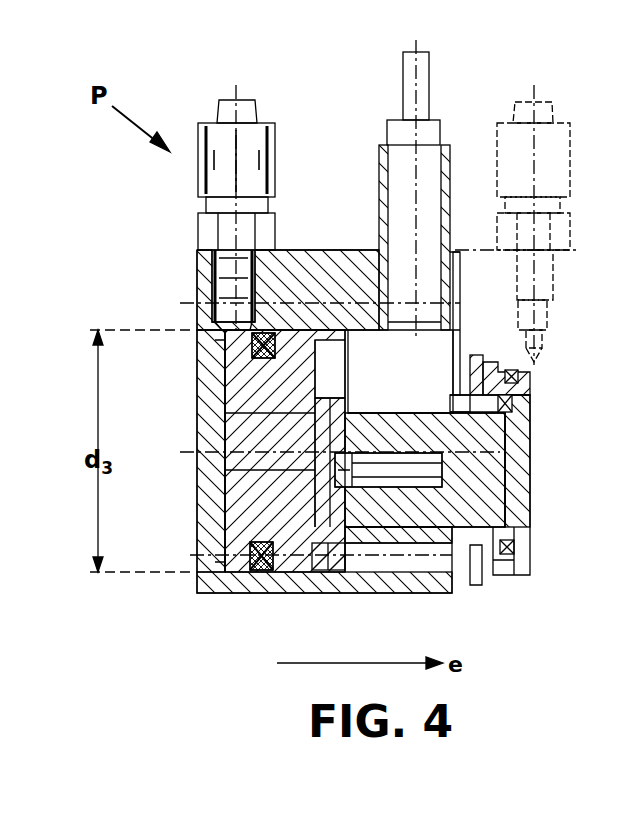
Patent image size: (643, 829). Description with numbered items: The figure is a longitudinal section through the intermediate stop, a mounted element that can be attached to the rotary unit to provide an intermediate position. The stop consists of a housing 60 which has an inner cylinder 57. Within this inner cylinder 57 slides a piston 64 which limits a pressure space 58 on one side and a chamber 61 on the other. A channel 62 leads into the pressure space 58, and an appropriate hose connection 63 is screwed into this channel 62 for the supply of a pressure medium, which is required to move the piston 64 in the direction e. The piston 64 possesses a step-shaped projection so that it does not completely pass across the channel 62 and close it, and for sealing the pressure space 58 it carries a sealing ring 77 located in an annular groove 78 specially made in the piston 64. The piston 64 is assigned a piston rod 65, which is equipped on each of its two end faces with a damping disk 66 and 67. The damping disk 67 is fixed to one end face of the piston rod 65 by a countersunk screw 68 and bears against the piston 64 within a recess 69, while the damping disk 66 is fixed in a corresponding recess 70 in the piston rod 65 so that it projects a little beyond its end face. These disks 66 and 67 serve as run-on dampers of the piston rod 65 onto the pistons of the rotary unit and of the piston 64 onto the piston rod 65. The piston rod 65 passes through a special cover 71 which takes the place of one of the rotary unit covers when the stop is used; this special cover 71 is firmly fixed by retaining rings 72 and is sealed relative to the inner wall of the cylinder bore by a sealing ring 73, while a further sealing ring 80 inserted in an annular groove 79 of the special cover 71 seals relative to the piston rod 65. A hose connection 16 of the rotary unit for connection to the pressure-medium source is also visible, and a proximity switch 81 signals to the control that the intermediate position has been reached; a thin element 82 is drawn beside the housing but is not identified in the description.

The hose connection 16 is at (572, 142).
The inner cylinder 57 is at (300, 330).
The pressure space 58 is at (218, 345).
The housing 60 is at (220, 426).
The chamber 61 is at (228, 390).
The channel 62 is at (235, 330).
The hose connection 63 is at (270, 123).
The piston 64 is at (300, 478).
The piston rod 65 is at (427, 520).
The damping disk 66 is at (513, 492).
The damping disk 67 is at (332, 538).
The countersunk screw 68 is at (335, 472).
The recess 69 is at (338, 376).
The recess 70 is at (527, 435).
The special cover 71 is at (528, 553).
The retaining ring 72 is at (483, 357).
The sealing ring 73 is at (527, 372).
The sealing ring 77 is at (255, 562).
The annular groove 78 is at (250, 560).
The annular groove 79 is at (530, 388).
The sealing ring 80 is at (530, 408).
The proximity switch 81 is at (432, 120).
The thin wall 82 is at (465, 395).